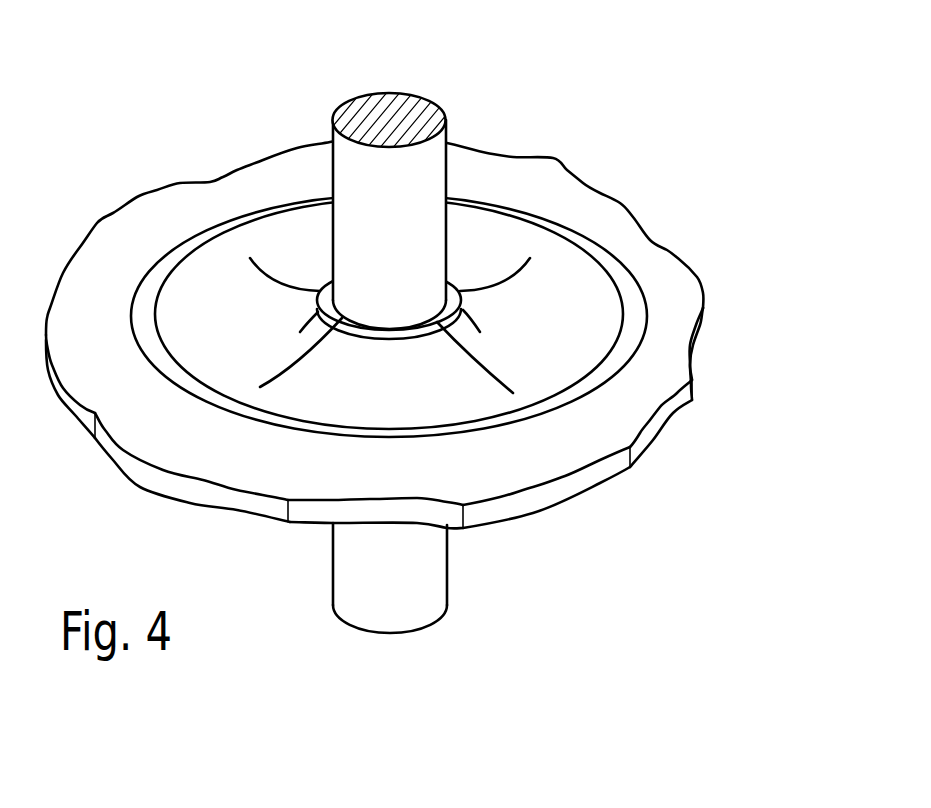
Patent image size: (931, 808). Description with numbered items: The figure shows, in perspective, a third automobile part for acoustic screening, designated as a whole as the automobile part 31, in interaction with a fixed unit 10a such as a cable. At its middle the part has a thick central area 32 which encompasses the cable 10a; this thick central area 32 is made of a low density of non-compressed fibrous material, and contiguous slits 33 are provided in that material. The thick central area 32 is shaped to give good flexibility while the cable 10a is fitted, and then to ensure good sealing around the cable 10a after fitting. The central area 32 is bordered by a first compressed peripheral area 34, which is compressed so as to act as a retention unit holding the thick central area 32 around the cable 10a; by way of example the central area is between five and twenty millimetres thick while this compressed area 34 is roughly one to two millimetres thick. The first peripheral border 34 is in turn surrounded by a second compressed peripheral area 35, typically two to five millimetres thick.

The fixed unit 10a is at (437, 106).
The automobile part 31 is at (417, 303).
The thick central area 32 is at (520, 292).
The contiguous slits 33 is at (287, 367).
The first compressed peripheral area 34 is at (635, 297).
The second compressed peripheral area 35 is at (627, 413).